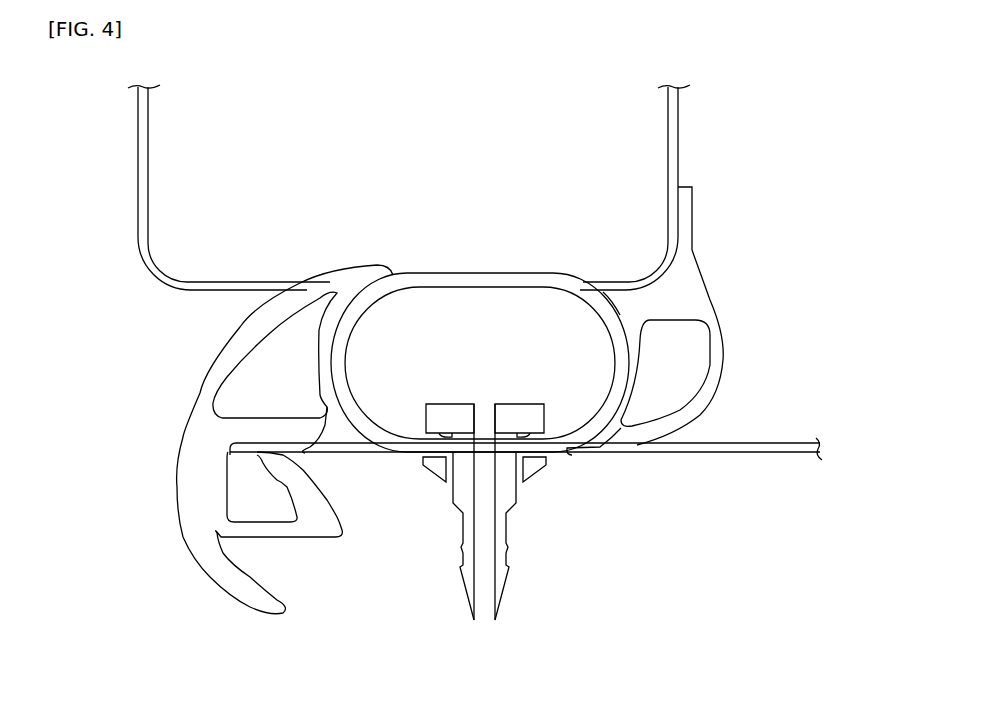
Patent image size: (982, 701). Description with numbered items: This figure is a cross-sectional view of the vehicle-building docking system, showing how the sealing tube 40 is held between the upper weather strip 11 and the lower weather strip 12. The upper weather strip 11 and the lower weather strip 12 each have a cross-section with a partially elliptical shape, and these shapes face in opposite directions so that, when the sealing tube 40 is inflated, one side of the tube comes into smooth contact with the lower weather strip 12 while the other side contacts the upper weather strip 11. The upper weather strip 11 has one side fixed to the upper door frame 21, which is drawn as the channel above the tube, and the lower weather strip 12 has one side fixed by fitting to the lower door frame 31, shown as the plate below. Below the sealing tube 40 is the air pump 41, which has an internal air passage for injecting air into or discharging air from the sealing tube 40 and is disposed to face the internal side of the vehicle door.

The upper weather strip 11 is at (685, 292).
The lower weather strip 12 is at (202, 443).
The upper door frame 21 is at (672, 135).
The lower door frame 31 is at (775, 448).
The sealing tube 40 is at (481, 283).
The air pump 41 is at (506, 493).